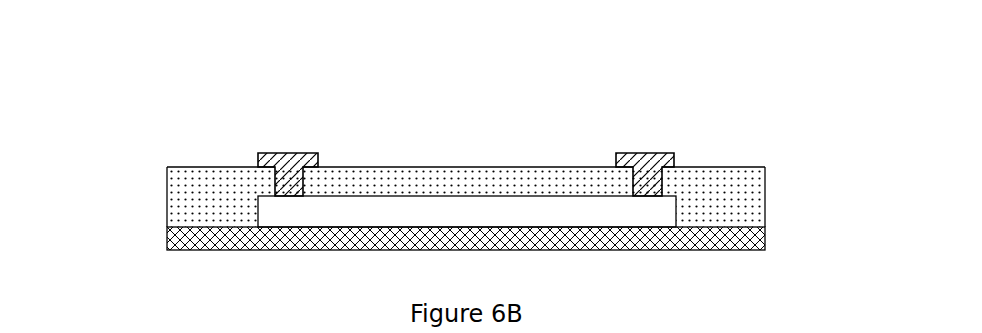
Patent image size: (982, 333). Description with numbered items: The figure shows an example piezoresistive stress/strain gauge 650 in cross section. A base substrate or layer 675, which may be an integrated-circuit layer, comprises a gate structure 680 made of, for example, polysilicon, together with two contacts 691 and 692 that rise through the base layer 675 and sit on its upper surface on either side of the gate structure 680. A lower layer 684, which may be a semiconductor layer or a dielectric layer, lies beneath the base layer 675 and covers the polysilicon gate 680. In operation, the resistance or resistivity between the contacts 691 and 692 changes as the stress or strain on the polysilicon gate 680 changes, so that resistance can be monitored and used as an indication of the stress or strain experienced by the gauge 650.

The stress/strain gauge 650 is at (89, 84).
The base substrate or layer 675 is at (761, 197).
The gate structure 680 is at (565, 227).
The lower layer 684 is at (158, 237).
The contact 691 is at (290, 152).
The contact 692 is at (646, 152).